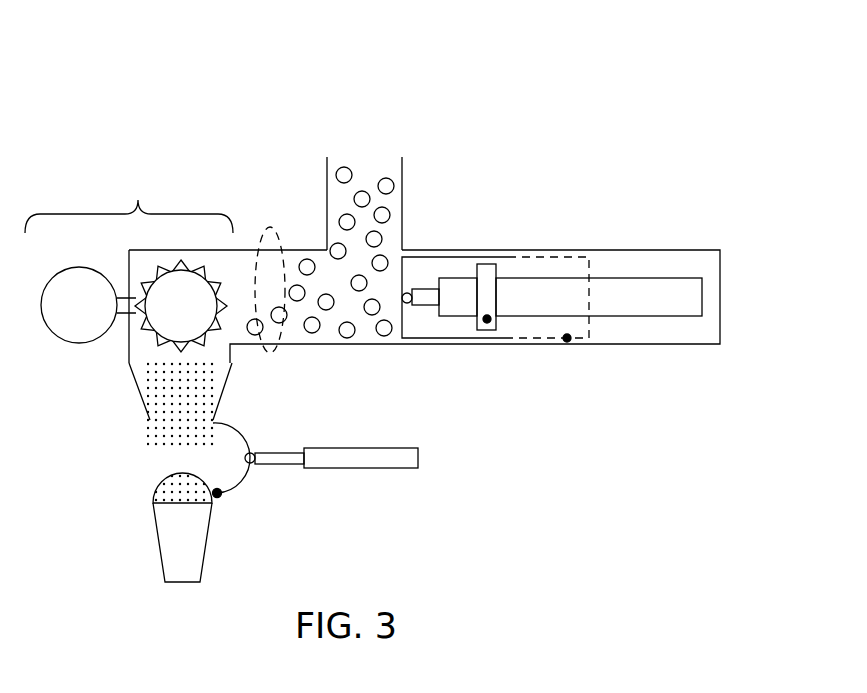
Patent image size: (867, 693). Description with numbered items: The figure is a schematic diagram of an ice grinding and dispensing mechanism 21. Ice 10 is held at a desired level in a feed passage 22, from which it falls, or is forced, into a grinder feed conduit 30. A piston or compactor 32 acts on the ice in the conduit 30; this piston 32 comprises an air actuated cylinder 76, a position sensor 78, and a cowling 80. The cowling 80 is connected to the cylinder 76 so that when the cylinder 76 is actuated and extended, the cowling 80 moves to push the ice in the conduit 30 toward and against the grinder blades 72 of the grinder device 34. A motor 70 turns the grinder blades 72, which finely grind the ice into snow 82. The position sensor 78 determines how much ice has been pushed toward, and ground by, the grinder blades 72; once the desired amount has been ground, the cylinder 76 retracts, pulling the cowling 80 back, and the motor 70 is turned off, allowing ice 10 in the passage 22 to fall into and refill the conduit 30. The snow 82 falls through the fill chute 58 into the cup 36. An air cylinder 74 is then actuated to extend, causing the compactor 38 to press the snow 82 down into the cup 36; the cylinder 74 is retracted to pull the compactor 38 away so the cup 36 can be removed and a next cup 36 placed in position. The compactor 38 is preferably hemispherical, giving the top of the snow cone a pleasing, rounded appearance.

The ice grinding and dispensing mechanism 21 is at (456, 68).
The ice 10 is at (338, 160).
The feed passage 22 is at (320, 193).
The grinder feed conduit 30 is at (267, 230).
The grinder device 34 is at (129, 201).
The piston or compactor 32 is at (550, 263).
The motor 70 is at (65, 318).
The grinder blades 72 is at (167, 319).
The air actuated cylinder 76 is at (651, 308).
The position sensor 78 is at (487, 319).
The cowling 80 is at (567, 338).
The fill chute 58 is at (130, 395).
The snow 82 is at (166, 403).
The piston or compactor 38 is at (240, 432).
The cup 36 is at (169, 546).
The air cylinder 74 is at (393, 472).